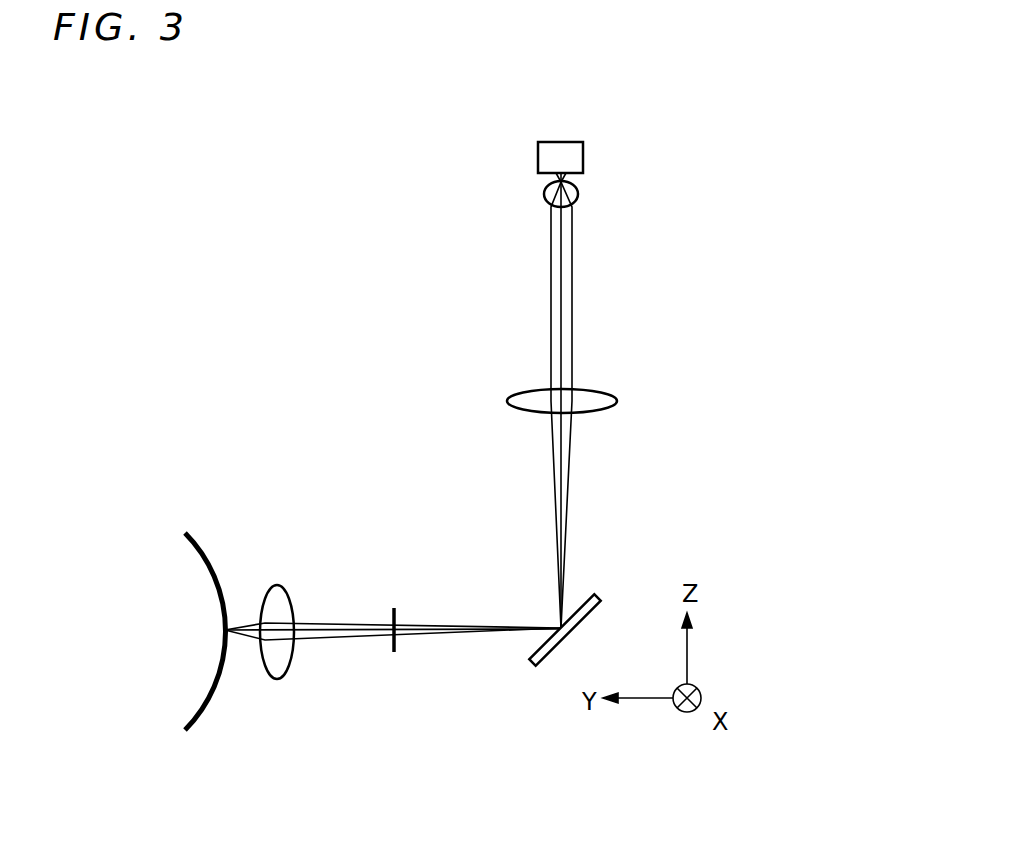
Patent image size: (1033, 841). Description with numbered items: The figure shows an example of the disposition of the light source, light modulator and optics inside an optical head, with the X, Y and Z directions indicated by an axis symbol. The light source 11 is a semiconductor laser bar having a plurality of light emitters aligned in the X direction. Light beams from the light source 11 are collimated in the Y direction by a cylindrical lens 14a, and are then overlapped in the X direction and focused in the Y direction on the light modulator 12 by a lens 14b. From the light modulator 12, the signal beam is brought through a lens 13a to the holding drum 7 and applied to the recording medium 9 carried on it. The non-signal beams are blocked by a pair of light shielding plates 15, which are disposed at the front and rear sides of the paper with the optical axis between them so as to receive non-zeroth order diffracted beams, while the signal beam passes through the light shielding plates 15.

The holding drum 7 is at (194, 547).
The recording medium 9 is at (218, 578).
The light source 11 is at (583, 157).
The light modulator 12 is at (596, 595).
The lens 13a is at (280, 587).
The cylindrical lens 14a is at (578, 198).
The lens 14b is at (612, 399).
The light shielding plates 15 is at (394, 608).